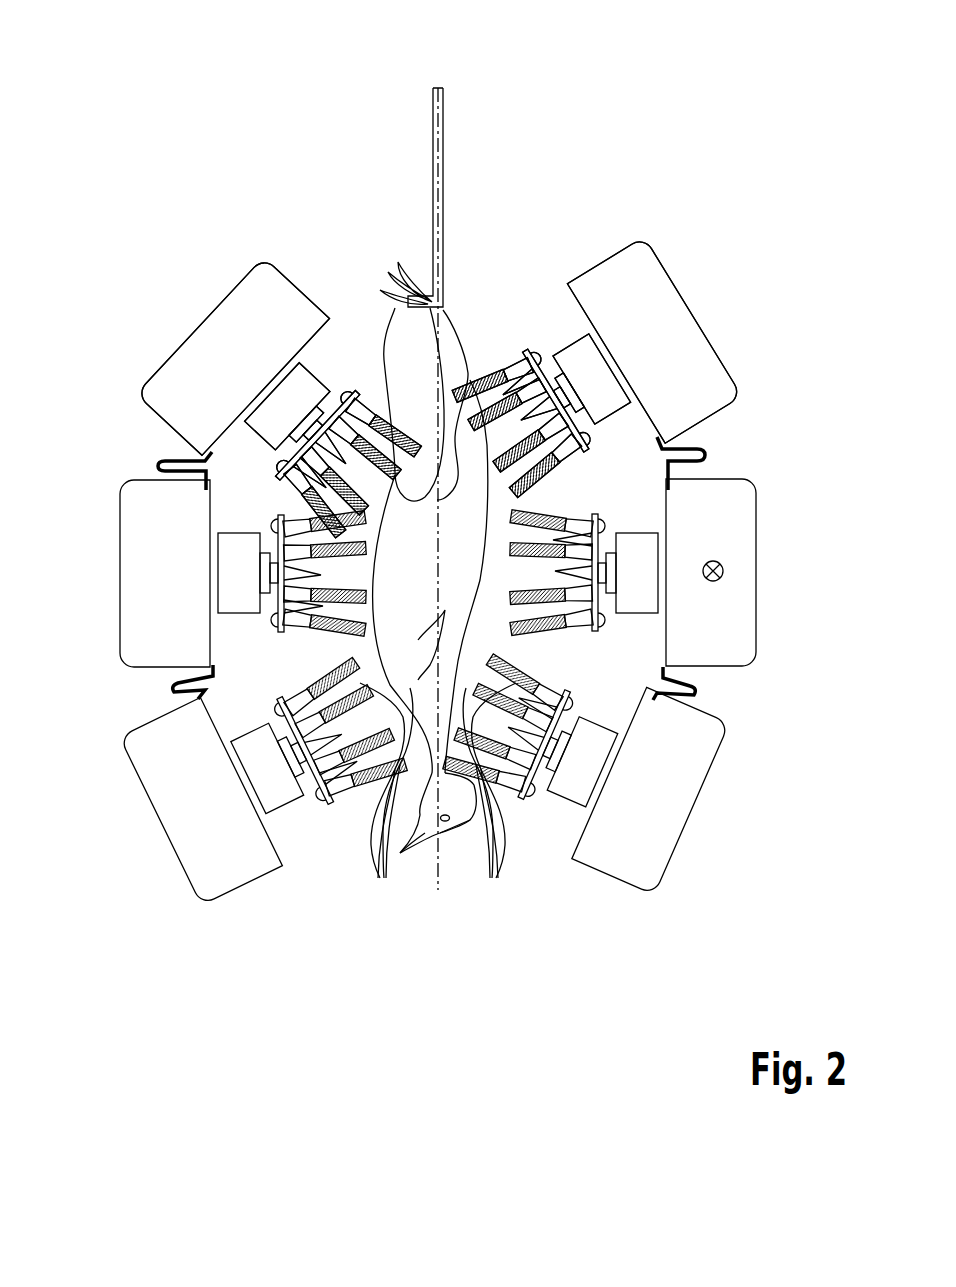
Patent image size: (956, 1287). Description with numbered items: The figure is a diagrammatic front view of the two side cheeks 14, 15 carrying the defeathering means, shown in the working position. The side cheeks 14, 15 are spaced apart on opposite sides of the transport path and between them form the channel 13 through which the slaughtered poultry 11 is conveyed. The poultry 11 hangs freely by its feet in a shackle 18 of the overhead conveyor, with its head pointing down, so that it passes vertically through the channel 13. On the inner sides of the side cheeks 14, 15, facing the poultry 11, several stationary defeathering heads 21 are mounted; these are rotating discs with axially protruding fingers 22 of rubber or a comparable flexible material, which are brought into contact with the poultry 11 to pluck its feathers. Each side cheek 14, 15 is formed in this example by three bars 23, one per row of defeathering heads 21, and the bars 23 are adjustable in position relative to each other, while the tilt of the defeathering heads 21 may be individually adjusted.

The poultry 11 is at (455, 518).
The channel 13 is at (402, 367).
The side cheek 14 is at (282, 248).
The side cheek 15 is at (701, 231).
The shackle 18 is at (441, 170).
The defeathering head 21 is at (345, 370).
The fingers 22 is at (438, 800).
The bar 23 is at (195, 363).